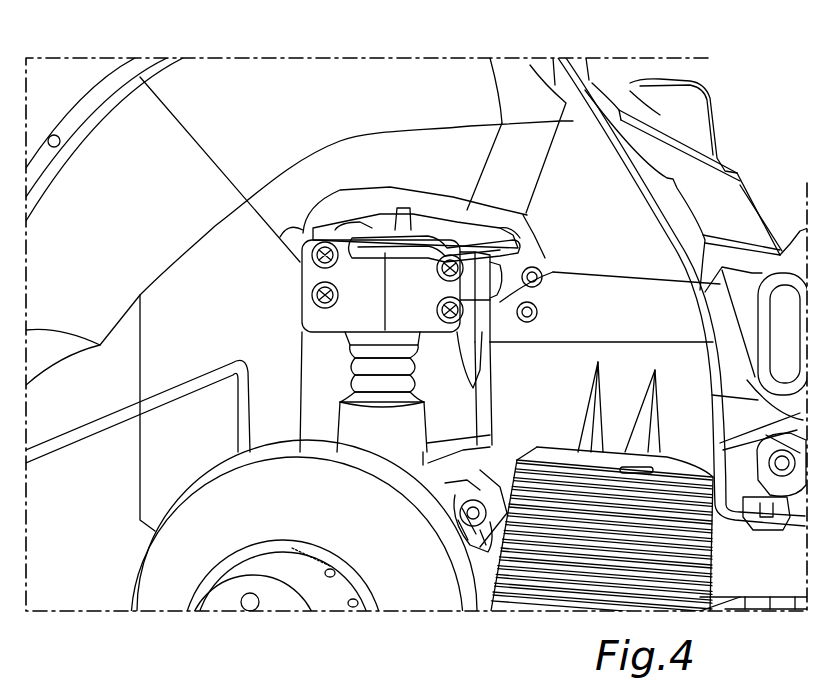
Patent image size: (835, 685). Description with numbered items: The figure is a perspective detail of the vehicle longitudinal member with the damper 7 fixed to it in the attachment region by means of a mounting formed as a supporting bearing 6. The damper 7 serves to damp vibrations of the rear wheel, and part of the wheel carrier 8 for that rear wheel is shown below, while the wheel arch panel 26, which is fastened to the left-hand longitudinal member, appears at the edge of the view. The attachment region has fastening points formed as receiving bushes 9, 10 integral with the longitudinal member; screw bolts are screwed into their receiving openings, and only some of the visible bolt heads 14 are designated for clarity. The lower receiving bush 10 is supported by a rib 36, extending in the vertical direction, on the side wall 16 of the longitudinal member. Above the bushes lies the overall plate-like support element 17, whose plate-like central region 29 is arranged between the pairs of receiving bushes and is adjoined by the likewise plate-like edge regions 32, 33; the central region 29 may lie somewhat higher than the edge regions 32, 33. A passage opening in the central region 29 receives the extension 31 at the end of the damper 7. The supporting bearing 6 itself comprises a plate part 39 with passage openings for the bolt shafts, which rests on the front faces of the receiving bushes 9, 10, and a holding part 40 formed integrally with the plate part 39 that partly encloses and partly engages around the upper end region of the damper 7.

The supporting bearing 6 is at (372, 285).
The damper 7 is at (353, 426).
The wheel carrier 8 is at (230, 595).
The receiving bush 9 is at (538, 264).
The receiving bush 10 is at (500, 302).
The bolt heads 14 is at (312, 255).
The side wall 16 is at (634, 302).
The support element 17 is at (370, 210).
The wheel arch panel 26 is at (147, 123).
The central region 29 is at (420, 215).
The extension 31 is at (400, 212).
The edge region 32 is at (528, 214).
The edge region 33 is at (340, 224).
The rib 36 is at (458, 345).
The plate part 39 is at (476, 300).
The holding part 40 is at (360, 305).